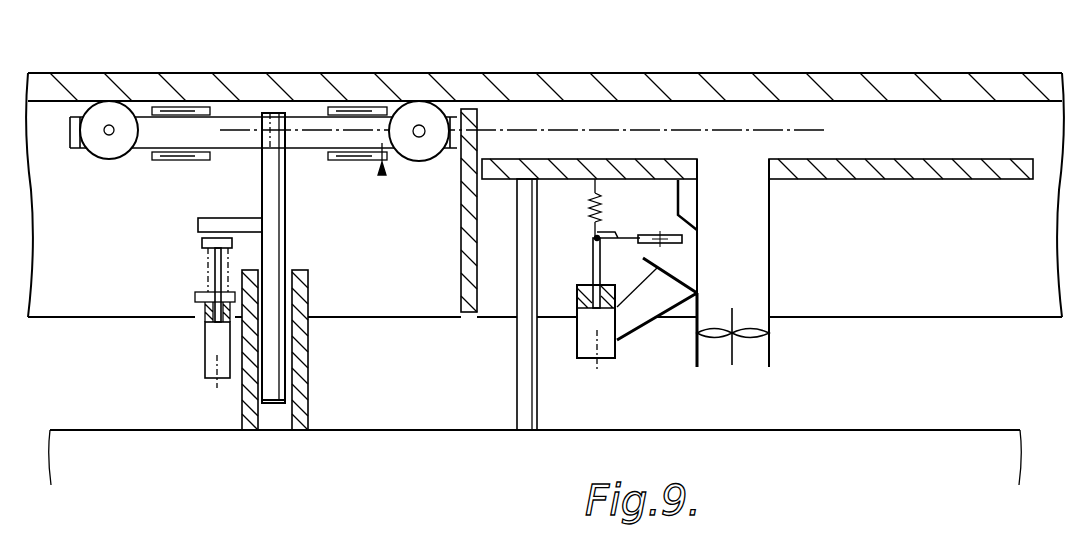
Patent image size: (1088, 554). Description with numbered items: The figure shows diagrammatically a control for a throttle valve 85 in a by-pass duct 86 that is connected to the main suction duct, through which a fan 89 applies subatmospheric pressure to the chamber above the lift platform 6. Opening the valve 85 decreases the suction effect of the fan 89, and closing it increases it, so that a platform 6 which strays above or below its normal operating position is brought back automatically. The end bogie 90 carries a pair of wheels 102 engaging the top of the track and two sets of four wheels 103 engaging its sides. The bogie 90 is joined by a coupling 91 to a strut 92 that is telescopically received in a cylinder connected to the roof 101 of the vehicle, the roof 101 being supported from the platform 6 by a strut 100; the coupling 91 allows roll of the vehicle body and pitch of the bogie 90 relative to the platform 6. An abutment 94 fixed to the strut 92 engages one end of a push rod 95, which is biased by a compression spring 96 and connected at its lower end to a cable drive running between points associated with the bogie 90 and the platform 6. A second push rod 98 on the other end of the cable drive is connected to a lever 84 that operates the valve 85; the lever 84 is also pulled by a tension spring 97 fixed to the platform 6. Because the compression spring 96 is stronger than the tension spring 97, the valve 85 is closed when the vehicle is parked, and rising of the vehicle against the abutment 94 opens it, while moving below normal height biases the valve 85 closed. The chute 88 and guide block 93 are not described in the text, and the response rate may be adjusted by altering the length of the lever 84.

The lift platform 6 is at (942, 180).
The lever 84 is at (594, 237).
The throttle valve 85 is at (683, 243).
The by-pass duct 86 is at (696, 240).
The chute 88 is at (771, 300).
The fan 89 is at (772, 333).
The end bogie 90 is at (383, 175).
The coupling 91 is at (272, 114).
The strut 92 is at (266, 183).
The guide block 93 is at (310, 400).
The abutment 94 is at (226, 218).
The push rod 95 is at (202, 243).
The compression spring 96 is at (207, 266).
The tension spring 97 is at (604, 195).
The push rod 98 is at (593, 262).
The strut 100 is at (517, 392).
The roof 101 is at (910, 425).
The wheels 102 is at (113, 114).
The wheels 103 is at (362, 107).